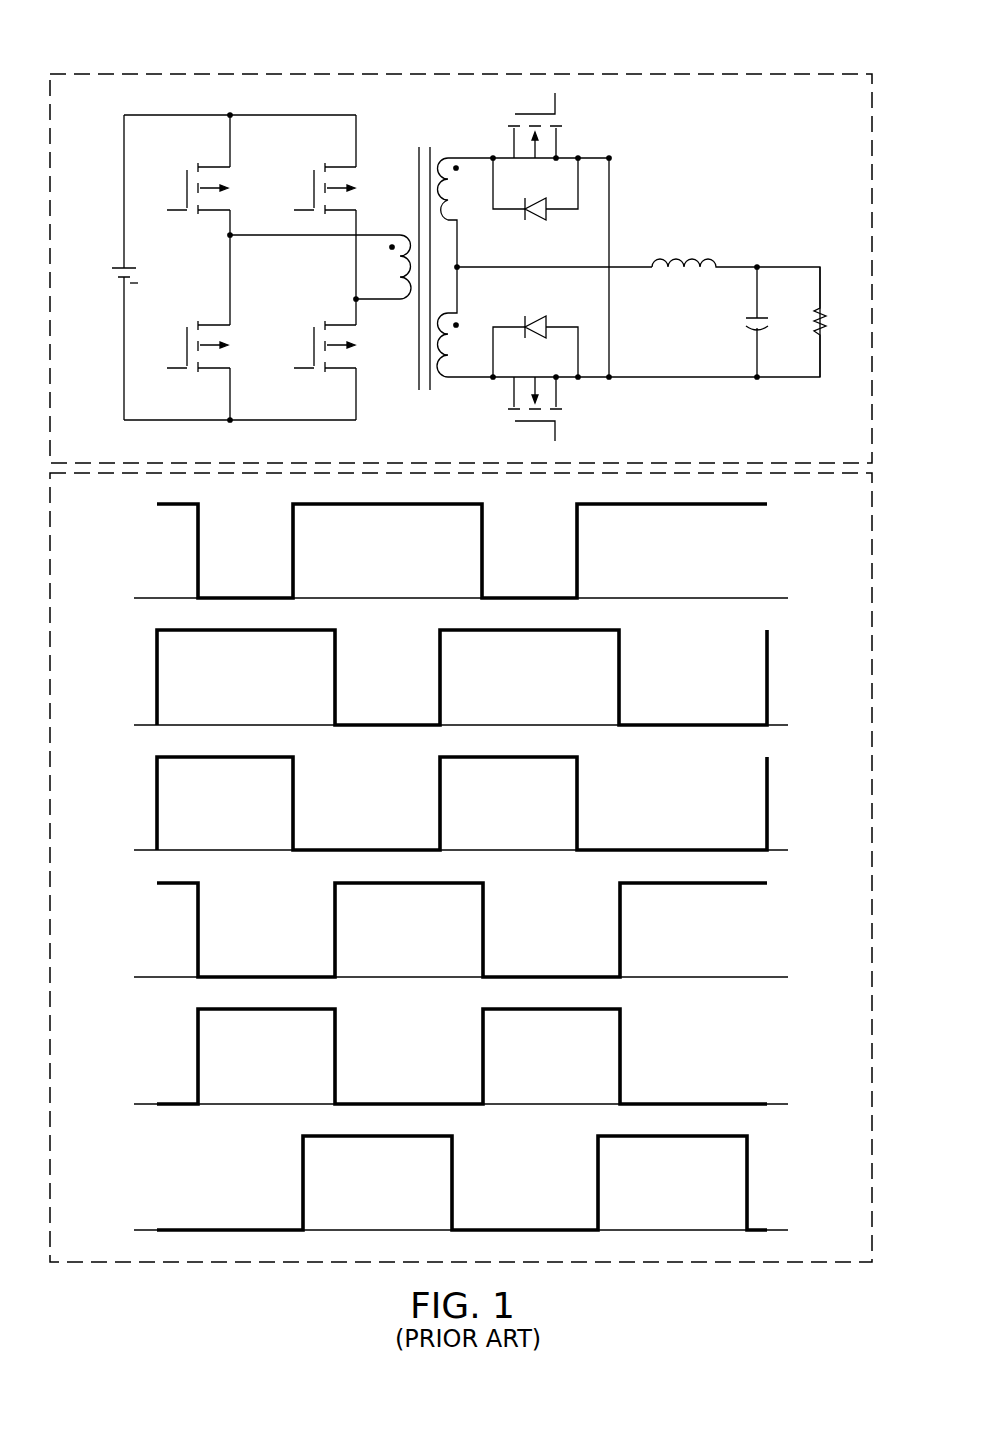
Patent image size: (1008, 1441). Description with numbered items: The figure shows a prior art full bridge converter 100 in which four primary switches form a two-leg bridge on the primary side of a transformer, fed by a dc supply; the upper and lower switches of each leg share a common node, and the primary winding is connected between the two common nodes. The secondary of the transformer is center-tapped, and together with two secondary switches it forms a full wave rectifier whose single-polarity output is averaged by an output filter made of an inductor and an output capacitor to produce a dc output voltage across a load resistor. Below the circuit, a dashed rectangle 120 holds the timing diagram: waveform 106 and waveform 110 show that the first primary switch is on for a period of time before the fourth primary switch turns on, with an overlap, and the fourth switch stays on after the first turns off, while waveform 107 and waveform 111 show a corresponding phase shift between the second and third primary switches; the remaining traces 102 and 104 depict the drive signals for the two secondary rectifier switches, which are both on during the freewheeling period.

The full bridge converter 100 is at (636, 74).
The S2 synchronous rectifier gate drive waveform 102 is at (143, 551).
The S1 synchronous rectifier gate drive waveform 104 is at (143, 678).
The waveform 106 is at (143, 803).
The waveform 107 is at (145, 929).
The waveform 110 is at (145, 1056).
The waveform 111 is at (145, 1182).
The dashed rectangle 120 is at (639, 1263).